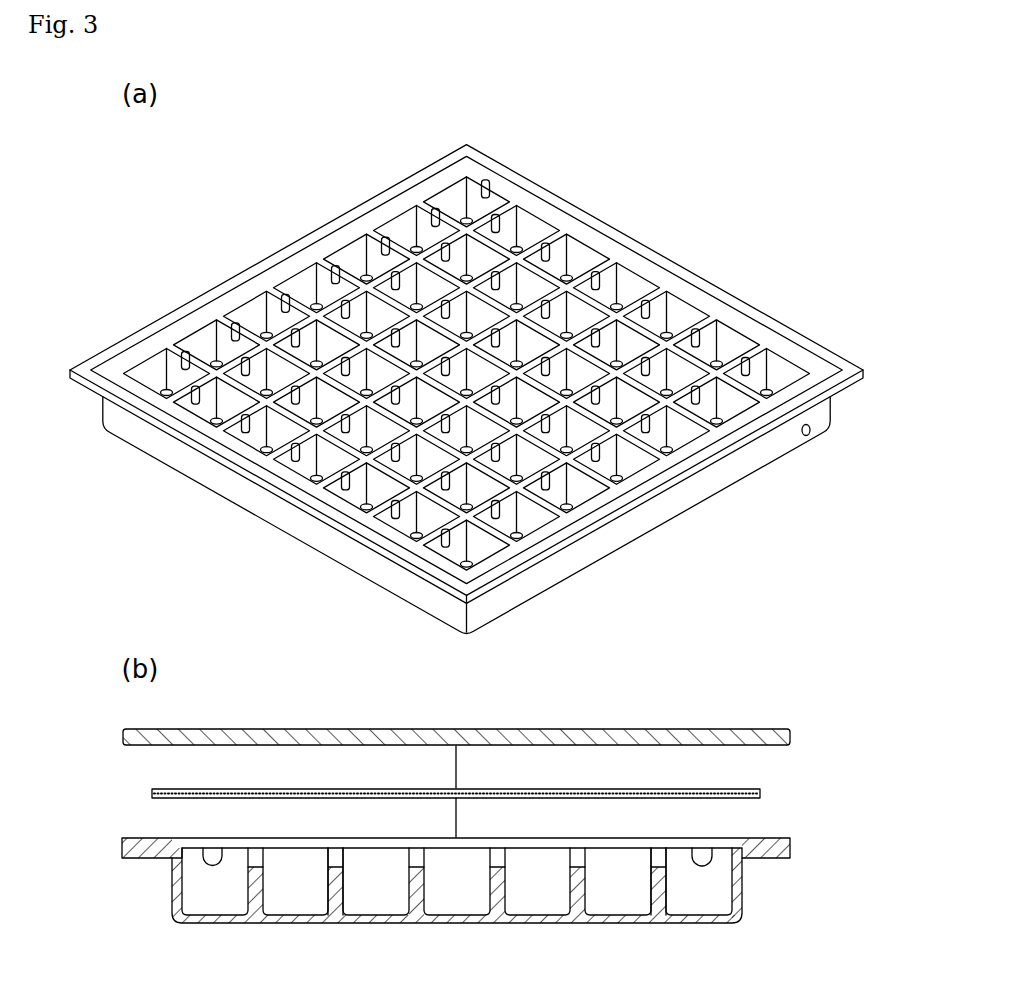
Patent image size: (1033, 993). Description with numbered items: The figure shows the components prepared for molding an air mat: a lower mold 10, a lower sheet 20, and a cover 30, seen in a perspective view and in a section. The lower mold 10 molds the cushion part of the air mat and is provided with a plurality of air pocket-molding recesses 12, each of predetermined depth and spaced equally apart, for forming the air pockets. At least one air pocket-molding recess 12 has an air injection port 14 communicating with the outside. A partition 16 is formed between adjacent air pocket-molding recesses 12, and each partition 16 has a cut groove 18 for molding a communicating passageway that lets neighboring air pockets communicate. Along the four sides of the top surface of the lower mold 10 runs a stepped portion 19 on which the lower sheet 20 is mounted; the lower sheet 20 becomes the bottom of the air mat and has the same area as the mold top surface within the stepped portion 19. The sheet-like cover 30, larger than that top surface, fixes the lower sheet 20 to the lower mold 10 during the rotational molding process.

The lower mold 10 is at (598, 216).
The air pocket-molding recess 12 is at (466, 193).
The air injection port 14 is at (810, 436).
The partition 16 is at (430, 208).
The cut groove 18 is at (266, 310).
The stepped portion 19 is at (708, 297).
The lower sheet 20 is at (152, 793).
The cover 30 is at (127, 731).